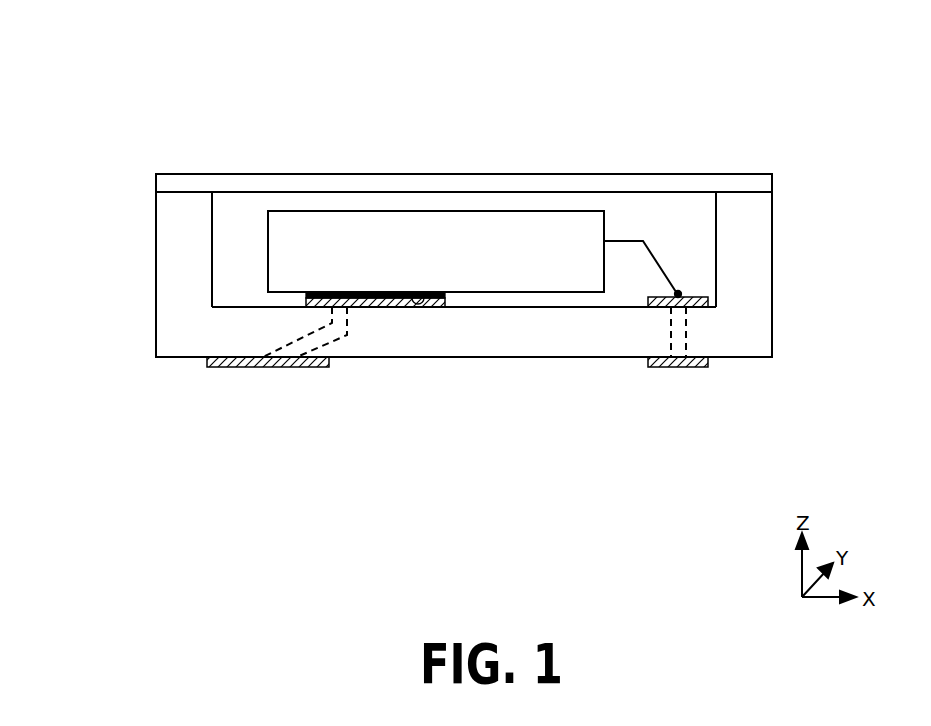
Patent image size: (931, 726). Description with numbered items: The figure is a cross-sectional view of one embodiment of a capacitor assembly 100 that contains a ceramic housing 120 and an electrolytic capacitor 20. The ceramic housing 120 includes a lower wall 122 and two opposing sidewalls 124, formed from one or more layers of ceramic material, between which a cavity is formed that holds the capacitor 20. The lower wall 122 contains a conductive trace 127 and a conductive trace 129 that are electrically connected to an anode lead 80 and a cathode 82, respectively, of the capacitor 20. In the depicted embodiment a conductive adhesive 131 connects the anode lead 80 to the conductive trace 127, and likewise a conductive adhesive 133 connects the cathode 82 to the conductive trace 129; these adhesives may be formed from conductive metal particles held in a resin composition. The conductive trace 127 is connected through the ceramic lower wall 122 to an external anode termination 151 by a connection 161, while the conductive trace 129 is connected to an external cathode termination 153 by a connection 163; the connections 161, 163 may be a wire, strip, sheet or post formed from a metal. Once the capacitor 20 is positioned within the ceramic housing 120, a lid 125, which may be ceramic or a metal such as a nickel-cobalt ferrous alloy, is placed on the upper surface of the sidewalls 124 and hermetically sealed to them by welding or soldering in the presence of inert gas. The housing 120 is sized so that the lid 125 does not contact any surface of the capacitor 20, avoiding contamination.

The capacitor assembly 100 is at (94, 90).
The ceramic housing 120 is at (790, 335).
The lower wall 122 is at (453, 345).
The sidewalls 124 is at (187, 275).
The lid 125 is at (183, 183).
The electrolytic capacitor 20 is at (474, 240).
The cathode 82 is at (292, 232).
The anode lead 80 is at (632, 241).
The conductive trace 129 is at (380, 296).
The conductive adhesive 133 is at (435, 293).
The conductive adhesive 131 is at (678, 292).
The conductive trace 127 is at (685, 296).
The connection 161 is at (680, 333).
The connection 163 is at (325, 335).
The external anode termination 151 is at (678, 367).
The external cathode termination 153 is at (253, 367).